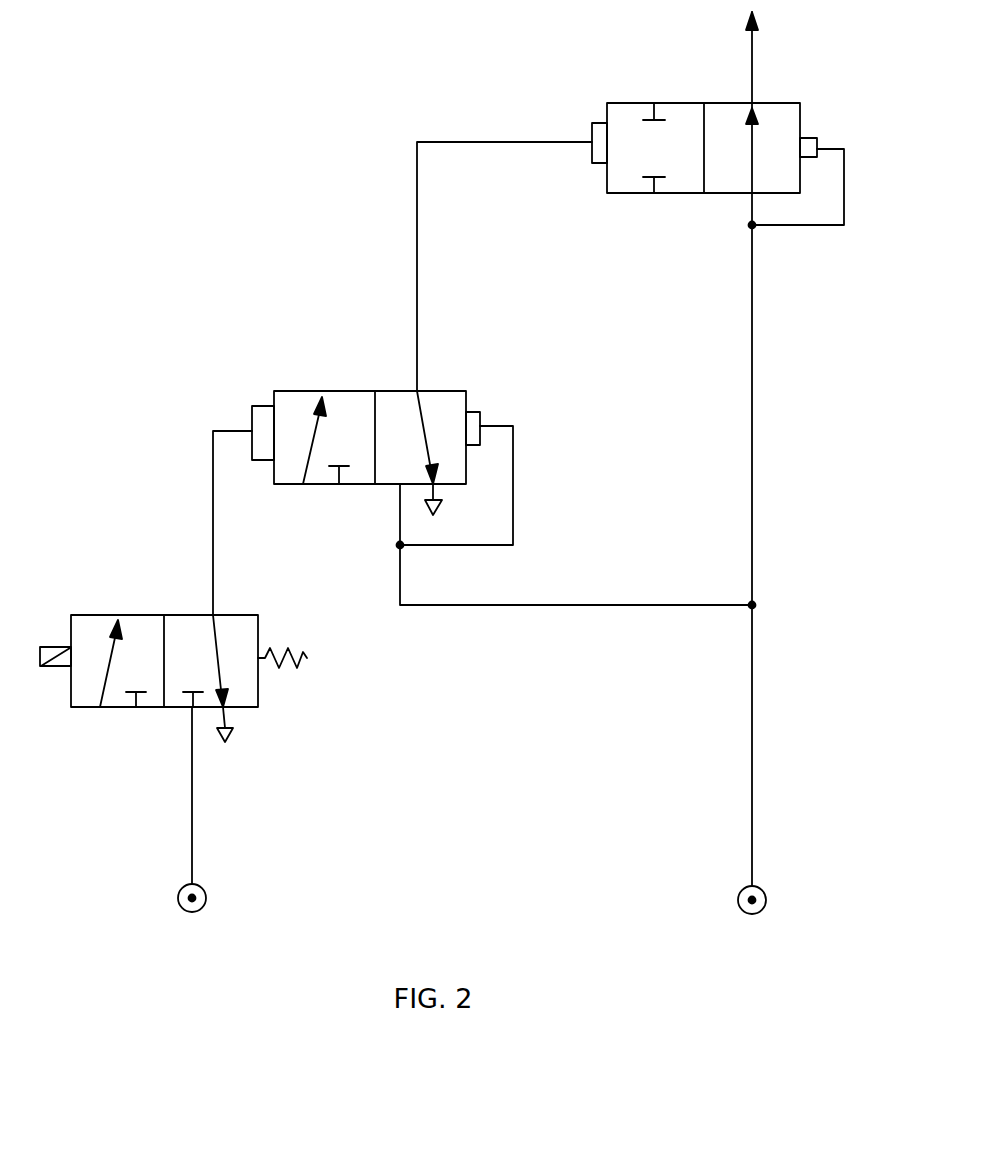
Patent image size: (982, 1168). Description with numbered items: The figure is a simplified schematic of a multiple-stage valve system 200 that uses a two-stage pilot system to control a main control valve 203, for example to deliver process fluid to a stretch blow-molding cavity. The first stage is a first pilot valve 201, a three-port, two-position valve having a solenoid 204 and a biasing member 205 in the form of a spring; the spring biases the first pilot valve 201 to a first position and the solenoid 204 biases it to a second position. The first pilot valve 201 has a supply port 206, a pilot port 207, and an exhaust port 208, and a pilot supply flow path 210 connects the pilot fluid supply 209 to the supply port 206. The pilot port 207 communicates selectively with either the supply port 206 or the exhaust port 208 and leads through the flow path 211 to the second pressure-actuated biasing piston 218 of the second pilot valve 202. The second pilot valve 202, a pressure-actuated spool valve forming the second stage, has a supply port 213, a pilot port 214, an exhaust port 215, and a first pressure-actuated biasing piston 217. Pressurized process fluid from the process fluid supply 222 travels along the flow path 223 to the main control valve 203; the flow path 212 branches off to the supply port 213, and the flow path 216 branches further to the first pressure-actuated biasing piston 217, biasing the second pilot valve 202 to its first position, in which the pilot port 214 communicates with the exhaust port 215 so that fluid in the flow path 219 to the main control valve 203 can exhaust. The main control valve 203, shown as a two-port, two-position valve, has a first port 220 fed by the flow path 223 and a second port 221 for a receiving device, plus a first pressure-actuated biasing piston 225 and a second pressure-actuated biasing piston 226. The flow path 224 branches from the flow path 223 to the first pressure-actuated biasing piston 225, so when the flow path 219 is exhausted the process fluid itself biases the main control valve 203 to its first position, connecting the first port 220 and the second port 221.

The multiple-stage valve system 200 is at (176, 136).
The first pilot valve 201 is at (84, 615).
The second pilot valve 202 is at (279, 391).
The main control valve 203 is at (624, 103).
The solenoid 204 is at (53, 667).
The biasing member 205 is at (307, 658).
The supply port 206 is at (100, 710).
The pilot port 207 is at (119, 617).
The exhaust port 208 is at (137, 710).
The pilot fluid supply 209 is at (206, 897).
The pilot supply flow path 210 is at (192, 841).
The flow path 211 is at (213, 533).
The flow path 212 is at (553, 606).
The supply port 213 is at (301, 487).
The pilot port 214 is at (322, 391).
The exhaust port 215 is at (339, 486).
The flow path 216 is at (513, 528).
The first pressure-actuated biasing piston 217 is at (474, 412).
The second pressure-actuated biasing piston 218 is at (258, 416).
The flow path 219 is at (417, 268).
The first port 220 is at (653, 194).
The second port 221 is at (655, 103).
The process fluid supply 222 is at (766, 900).
The flow path 223 is at (752, 533).
The flow path 224 is at (844, 194).
The first pressure-actuated biasing piston 225 is at (810, 140).
The second pressure-actuated biasing piston 226 is at (601, 158).